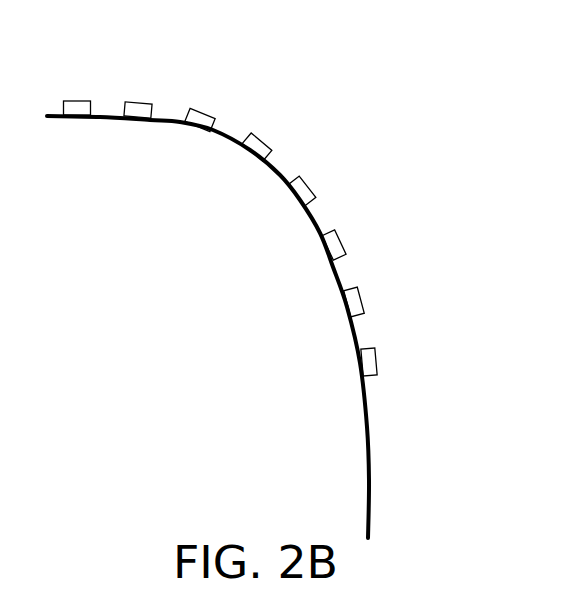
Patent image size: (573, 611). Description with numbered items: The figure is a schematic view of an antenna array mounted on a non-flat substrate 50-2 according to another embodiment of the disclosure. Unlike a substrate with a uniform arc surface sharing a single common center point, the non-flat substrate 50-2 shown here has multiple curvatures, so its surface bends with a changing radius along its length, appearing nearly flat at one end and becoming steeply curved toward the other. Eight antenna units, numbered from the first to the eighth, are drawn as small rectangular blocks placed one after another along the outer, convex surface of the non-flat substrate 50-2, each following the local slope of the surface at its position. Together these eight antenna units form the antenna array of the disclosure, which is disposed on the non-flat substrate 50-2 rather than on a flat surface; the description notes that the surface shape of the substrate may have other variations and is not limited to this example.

The non-flat substrate 50-2 is at (369, 456).